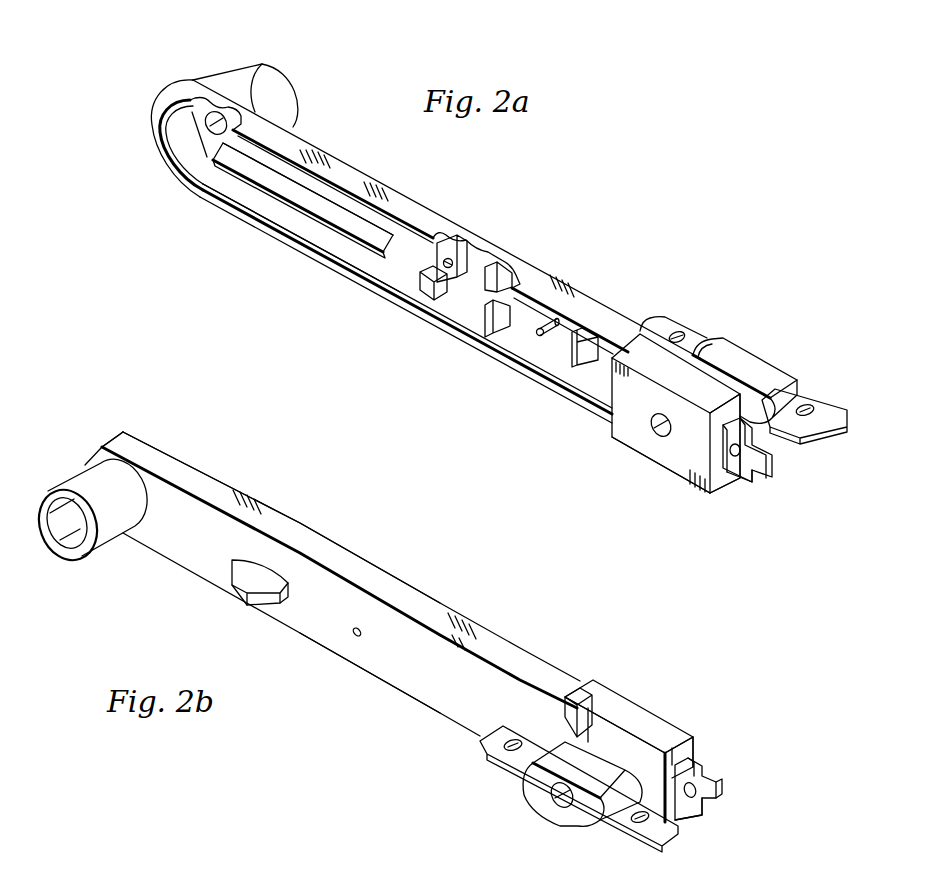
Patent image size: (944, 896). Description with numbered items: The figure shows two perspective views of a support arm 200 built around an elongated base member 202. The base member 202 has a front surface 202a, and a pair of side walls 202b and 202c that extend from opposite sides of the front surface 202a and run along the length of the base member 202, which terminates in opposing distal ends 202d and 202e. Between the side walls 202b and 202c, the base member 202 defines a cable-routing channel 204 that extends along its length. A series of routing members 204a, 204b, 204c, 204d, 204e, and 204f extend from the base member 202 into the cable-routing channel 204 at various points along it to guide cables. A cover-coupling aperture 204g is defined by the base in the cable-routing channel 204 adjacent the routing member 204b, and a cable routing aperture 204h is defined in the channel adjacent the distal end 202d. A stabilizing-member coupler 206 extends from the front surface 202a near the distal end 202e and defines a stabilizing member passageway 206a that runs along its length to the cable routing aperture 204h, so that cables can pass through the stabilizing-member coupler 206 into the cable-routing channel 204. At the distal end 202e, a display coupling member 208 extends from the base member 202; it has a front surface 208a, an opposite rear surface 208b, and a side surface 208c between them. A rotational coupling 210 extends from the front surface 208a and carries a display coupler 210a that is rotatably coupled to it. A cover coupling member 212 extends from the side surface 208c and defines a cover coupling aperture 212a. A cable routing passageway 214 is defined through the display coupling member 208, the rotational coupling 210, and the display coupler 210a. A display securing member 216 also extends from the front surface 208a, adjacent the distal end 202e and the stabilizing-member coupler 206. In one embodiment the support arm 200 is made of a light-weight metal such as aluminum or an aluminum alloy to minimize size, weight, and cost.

In FIG. 2A, the support arm 200 is at (606, 190).
In FIG. 2B, the support arm 200 is at (288, 722).
In FIG. 2A, the elongated base member 202 is at (403, 182).
In FIG. 2B, the elongated base member 202 is at (158, 567).
In FIG. 2B, the front surface 202a is at (413, 690).
In FIG. 2A, the side wall 202b is at (331, 160).
In FIG. 2B, the side wall 202b is at (360, 567).
In FIG. 2A, the side wall 202c is at (310, 233).
In FIG. 2A, the distal end 202d is at (153, 113).
In FIG. 2B, the distal end 202d is at (122, 432).
In FIG. 2A, the distal end 202e is at (693, 350).
In FIG. 2B, the distal end 202e is at (597, 725).
In FIG. 2A, the cable-routing channel 204 is at (393, 272).
In FIG. 2A, the routing member 204a is at (228, 165).
In FIG. 2A, the routing member 204b is at (427, 276).
In FIG. 2A, the routing member 204c is at (500, 275).
In FIG. 2A, the routing member 204d is at (483, 326).
In FIG. 2A, the routing member 204e is at (545, 336).
In FIG. 2A, the routing member 204f is at (590, 347).
In FIG. 2A, the cover-coupling aperture 204g is at (448, 258).
In FIG. 2B, the cover-coupling aperture 204g is at (353, 636).
In FIG. 2A, the cable routing aperture 204h is at (208, 130).
In FIG. 2A, the stabilizing-member coupler 206 is at (250, 77).
In FIG. 2B, the stabilizing-member coupler 206 is at (70, 483).
In FIG. 2B, the stabilizing member passageway 206a is at (50, 540).
In FIG. 2A, the display coupling member 208 is at (604, 430).
In FIG. 2B, the display coupling member 208 is at (688, 717).
In FIG. 2B, the front surface 208a is at (637, 750).
In FIG. 2A, the rear surface 208b is at (640, 443).
In FIG. 2A, the side surface 208c is at (727, 415).
In FIG. 2B, the side surface 208c is at (684, 753).
In FIG. 2A, the rotational coupling 210 is at (760, 345).
In FIG. 2B, the rotational coupling 210 is at (466, 744).
In FIG. 2A, the display coupler 210a is at (797, 373).
In FIG. 2B, the display coupler 210a is at (533, 783).
In FIG. 2A, the cover coupling member 212 is at (773, 467).
In FIG. 2B, the cover coupling member 212 is at (724, 803).
In FIG. 2A, the cover coupling aperture 212a is at (733, 465).
In FIG. 2B, the cover coupling aperture 212a is at (694, 815).
In FIG. 2A, the cable routing passageway 214 is at (668, 438).
In FIG. 2B, the cable routing passageway 214 is at (557, 800).
In FIG. 2B, the display securing member 216 is at (247, 593).